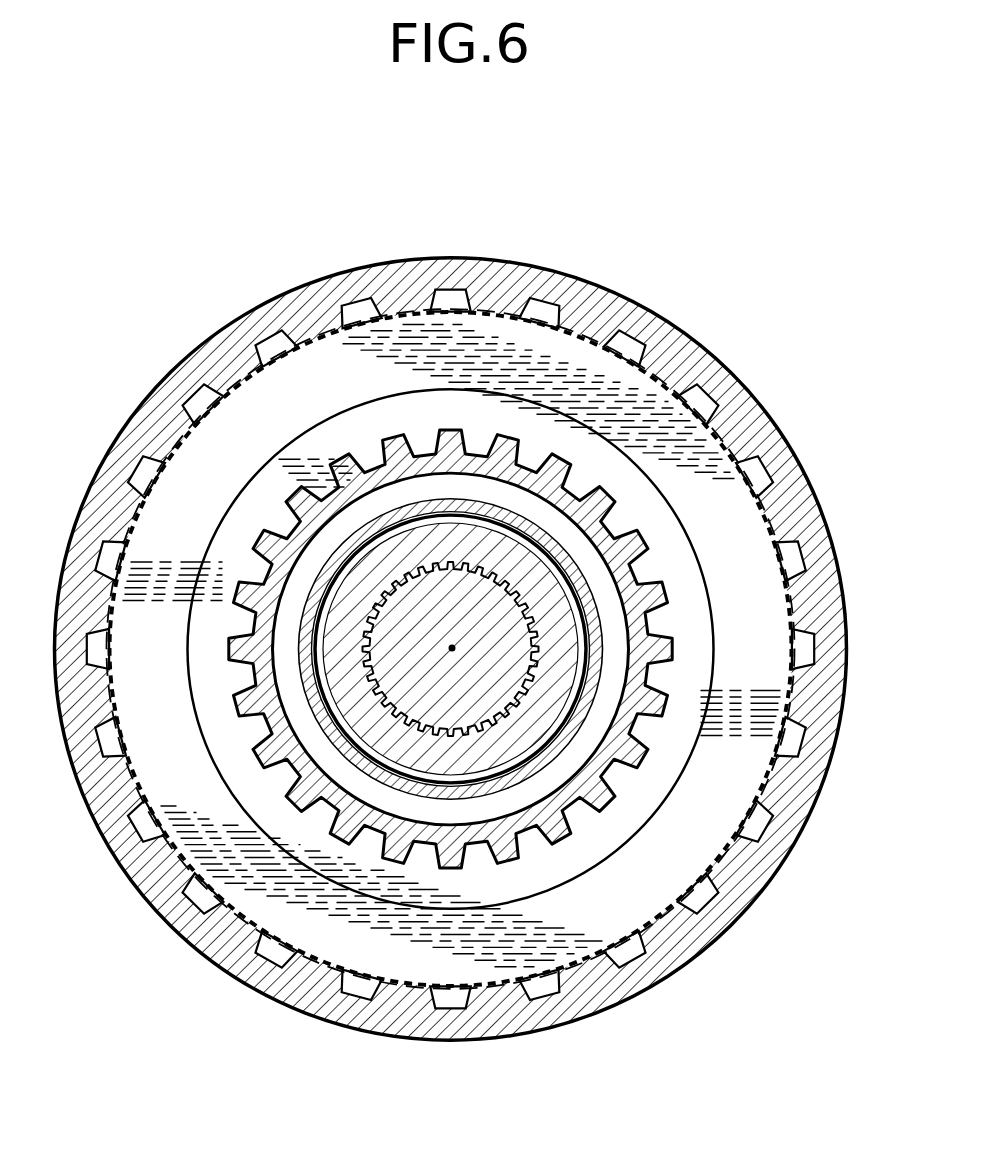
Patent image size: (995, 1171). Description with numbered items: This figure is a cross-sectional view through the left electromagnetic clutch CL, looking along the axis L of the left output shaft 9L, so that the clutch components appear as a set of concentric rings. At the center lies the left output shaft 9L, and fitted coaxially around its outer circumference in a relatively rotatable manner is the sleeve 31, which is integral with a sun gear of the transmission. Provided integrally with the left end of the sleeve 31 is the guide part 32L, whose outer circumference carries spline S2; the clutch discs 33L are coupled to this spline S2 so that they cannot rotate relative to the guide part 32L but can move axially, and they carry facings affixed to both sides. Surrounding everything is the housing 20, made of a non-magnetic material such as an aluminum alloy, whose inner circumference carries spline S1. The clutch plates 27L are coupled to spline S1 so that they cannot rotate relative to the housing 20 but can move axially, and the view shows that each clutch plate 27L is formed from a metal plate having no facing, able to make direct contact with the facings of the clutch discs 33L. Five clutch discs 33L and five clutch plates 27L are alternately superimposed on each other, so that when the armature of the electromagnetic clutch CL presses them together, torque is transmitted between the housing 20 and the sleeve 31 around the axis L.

The left electromagnetic clutch CL is at (788, 427).
The housing 20 is at (451, 626).
The spline S1 is at (472, 262).
The clutch plate 27L is at (307, 387).
The clutch disc 33L is at (398, 420).
The guide part 32L is at (458, 611).
The spline S2 is at (478, 438).
The sleeve 31 is at (315, 708).
The left output shaft 9L is at (472, 556).
The axis L is at (455, 648).